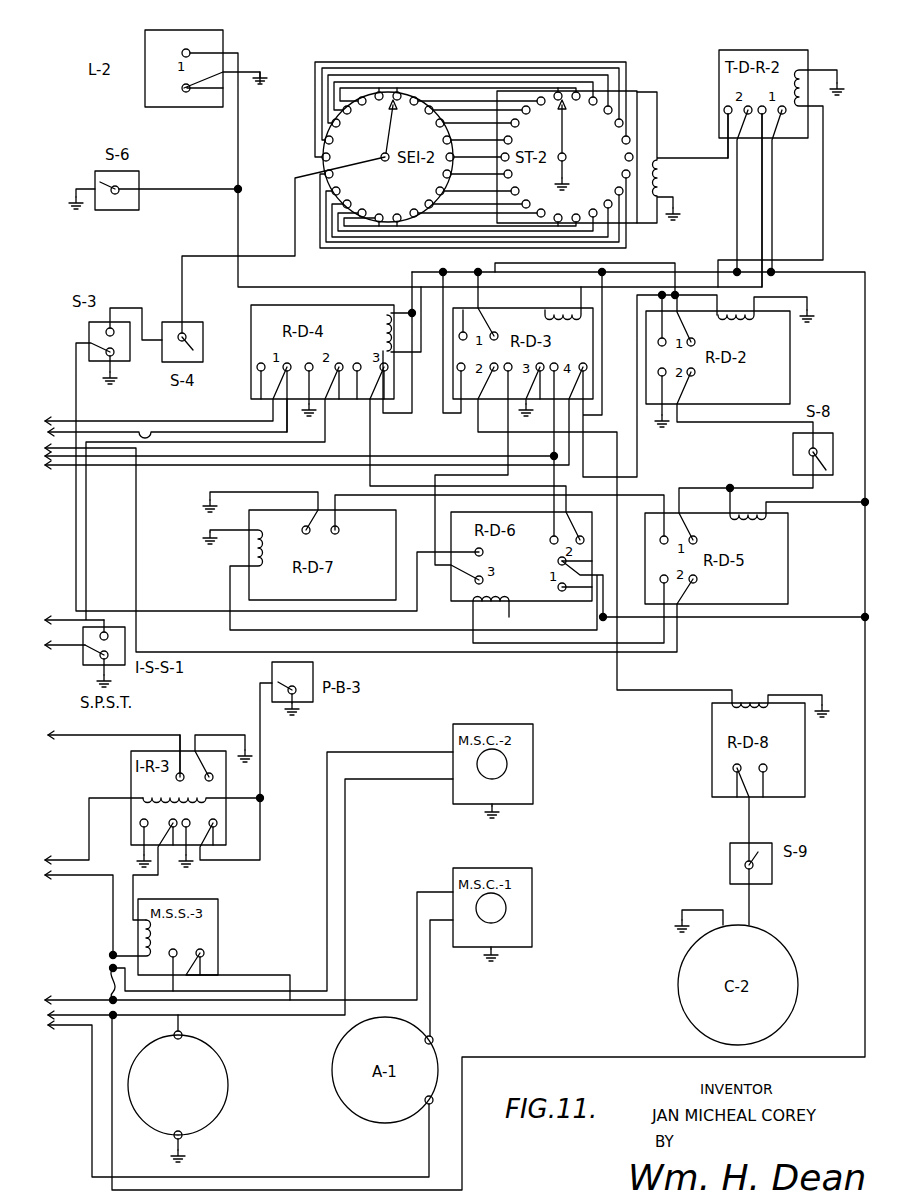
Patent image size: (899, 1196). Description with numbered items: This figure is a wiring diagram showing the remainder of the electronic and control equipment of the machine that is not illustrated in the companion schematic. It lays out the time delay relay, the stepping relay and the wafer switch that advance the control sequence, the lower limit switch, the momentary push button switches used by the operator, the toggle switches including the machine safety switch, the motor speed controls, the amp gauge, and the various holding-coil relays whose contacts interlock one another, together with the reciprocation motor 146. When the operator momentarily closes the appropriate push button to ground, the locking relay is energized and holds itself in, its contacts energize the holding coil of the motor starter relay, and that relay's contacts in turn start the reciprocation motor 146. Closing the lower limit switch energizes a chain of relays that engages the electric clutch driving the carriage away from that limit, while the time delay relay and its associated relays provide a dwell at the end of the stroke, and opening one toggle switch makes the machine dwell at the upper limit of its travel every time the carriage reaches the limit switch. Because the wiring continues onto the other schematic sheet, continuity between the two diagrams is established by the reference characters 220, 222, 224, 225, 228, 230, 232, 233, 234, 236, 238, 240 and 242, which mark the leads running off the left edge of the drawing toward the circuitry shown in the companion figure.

The continuity reference character 220 is at (85, 421).
The continuity reference character 222 is at (149, 431).
The continuity reference character 224 is at (68, 446).
The conductor lead 225 is at (157, 458).
The continuity reference character 228 is at (62, 466).
The continuity reference character 230 is at (58, 619).
The continuity reference character 232 is at (68, 652).
The continuity reference character 233 is at (98, 737).
The continuity reference character 234 is at (72, 858).
The continuity reference character 236 is at (68, 877).
The continuity reference character 238 is at (96, 1012).
The continuity reference character 240 is at (50, 998).
The continuity reference character 242 is at (70, 1027).
The reciprocation motor 146 is at (178, 1088).